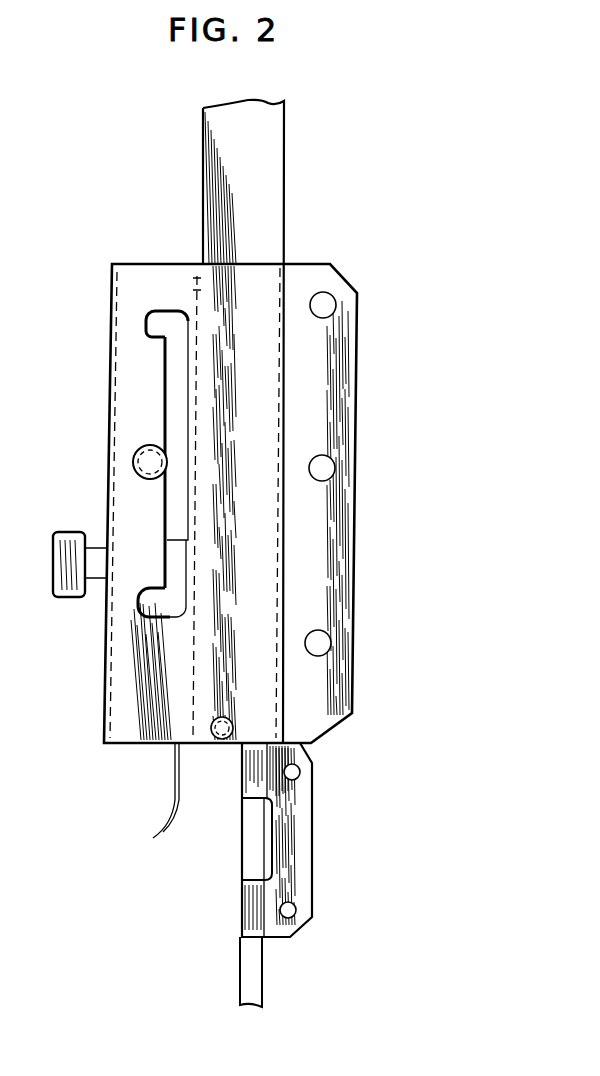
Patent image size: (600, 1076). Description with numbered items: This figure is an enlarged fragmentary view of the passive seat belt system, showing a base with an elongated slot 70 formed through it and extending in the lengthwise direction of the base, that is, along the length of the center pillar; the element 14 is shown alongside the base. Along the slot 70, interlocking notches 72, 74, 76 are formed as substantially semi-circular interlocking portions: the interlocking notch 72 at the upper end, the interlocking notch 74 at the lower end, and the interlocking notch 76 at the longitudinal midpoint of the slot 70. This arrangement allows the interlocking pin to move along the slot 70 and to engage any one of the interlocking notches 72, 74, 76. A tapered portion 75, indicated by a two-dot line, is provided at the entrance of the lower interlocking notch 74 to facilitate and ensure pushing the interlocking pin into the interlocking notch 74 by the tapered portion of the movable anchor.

The rod 14 is at (285, 240).
The slot 70 is at (165, 408).
The interlocking notch 72 is at (148, 327).
The interlocking notch 74 is at (145, 607).
The tapered portion 75 is at (157, 577).
The interlocking notch 76 is at (130, 455).